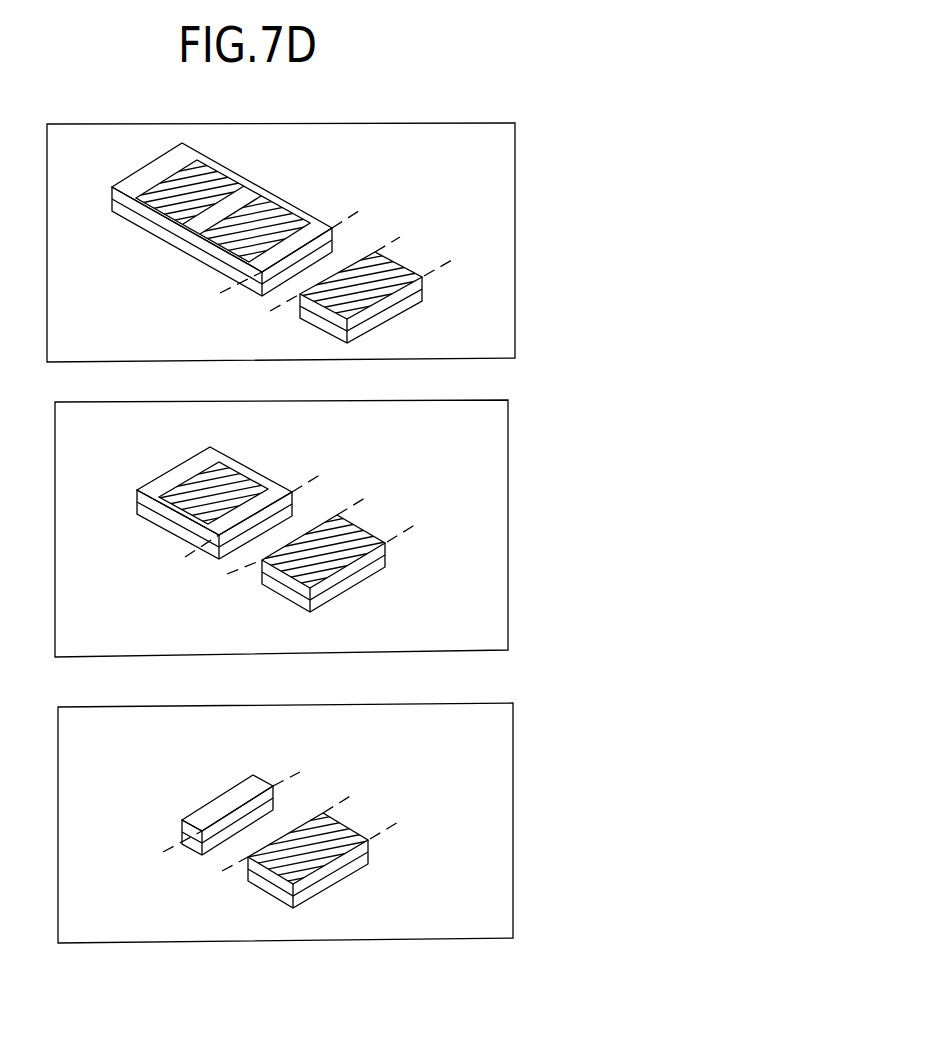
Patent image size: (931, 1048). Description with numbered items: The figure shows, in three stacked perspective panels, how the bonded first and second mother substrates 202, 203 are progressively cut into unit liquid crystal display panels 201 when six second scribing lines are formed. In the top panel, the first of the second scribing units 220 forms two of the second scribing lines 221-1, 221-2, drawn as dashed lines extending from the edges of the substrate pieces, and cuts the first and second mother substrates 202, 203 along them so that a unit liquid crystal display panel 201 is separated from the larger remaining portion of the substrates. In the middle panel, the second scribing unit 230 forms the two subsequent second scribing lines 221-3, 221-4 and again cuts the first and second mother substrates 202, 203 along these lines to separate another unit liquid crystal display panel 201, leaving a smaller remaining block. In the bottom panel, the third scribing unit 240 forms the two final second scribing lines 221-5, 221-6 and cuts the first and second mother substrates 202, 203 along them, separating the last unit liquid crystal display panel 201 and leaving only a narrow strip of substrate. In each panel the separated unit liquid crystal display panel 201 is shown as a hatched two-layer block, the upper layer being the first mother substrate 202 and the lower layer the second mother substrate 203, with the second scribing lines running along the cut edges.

The second scribing unit 220 is at (515, 143).
The second scribing unit 230 is at (508, 467).
The second scribing unit 240 is at (513, 772).
The unit liquid crystal display panel 201 is at (325, 304).
The first mother substrate 202 is at (425, 279).
The second mother substrate 203 is at (408, 305).
The second scribing line 221-1 is at (437, 265).
The second scribing line 221-2 is at (390, 237).
The second scribing line 221-3 is at (398, 530).
The second scribing line 221-4 is at (308, 482).
The second scribing line 221-5 is at (375, 833).
The second scribing line 221-6 is at (290, 780).